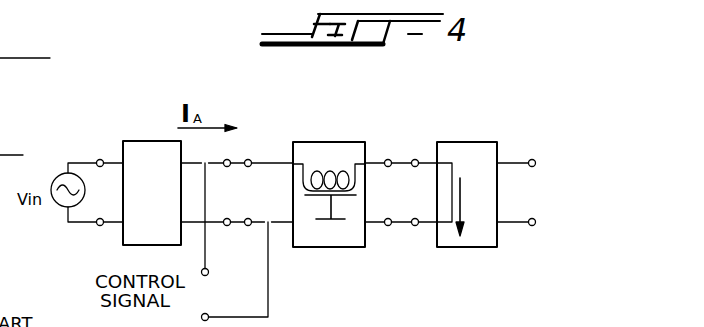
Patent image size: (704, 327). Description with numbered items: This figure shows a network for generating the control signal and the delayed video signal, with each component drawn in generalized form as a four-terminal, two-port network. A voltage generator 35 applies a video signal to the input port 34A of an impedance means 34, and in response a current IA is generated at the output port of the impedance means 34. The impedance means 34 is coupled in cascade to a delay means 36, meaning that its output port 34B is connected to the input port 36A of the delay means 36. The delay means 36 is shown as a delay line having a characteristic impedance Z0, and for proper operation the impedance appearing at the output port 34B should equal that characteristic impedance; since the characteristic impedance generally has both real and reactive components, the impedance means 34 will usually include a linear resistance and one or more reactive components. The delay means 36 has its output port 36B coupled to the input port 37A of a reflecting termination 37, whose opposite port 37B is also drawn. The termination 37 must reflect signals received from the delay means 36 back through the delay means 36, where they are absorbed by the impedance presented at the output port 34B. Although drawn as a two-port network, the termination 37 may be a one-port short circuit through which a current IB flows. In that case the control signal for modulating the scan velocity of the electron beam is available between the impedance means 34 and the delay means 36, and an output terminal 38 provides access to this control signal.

The impedance means 34 is at (145, 141).
The input port 34A is at (99, 167).
The output port 34B is at (222, 170).
The voltage generator 35 is at (56, 174).
The delay means 36 is at (328, 142).
The input port 36A is at (252, 217).
The output port 36B is at (387, 168).
The reflecting termination 37 is at (476, 143).
The input port 37A is at (417, 219).
The output terminals 37B is at (527, 168).
The output terminal 38 is at (208, 276).